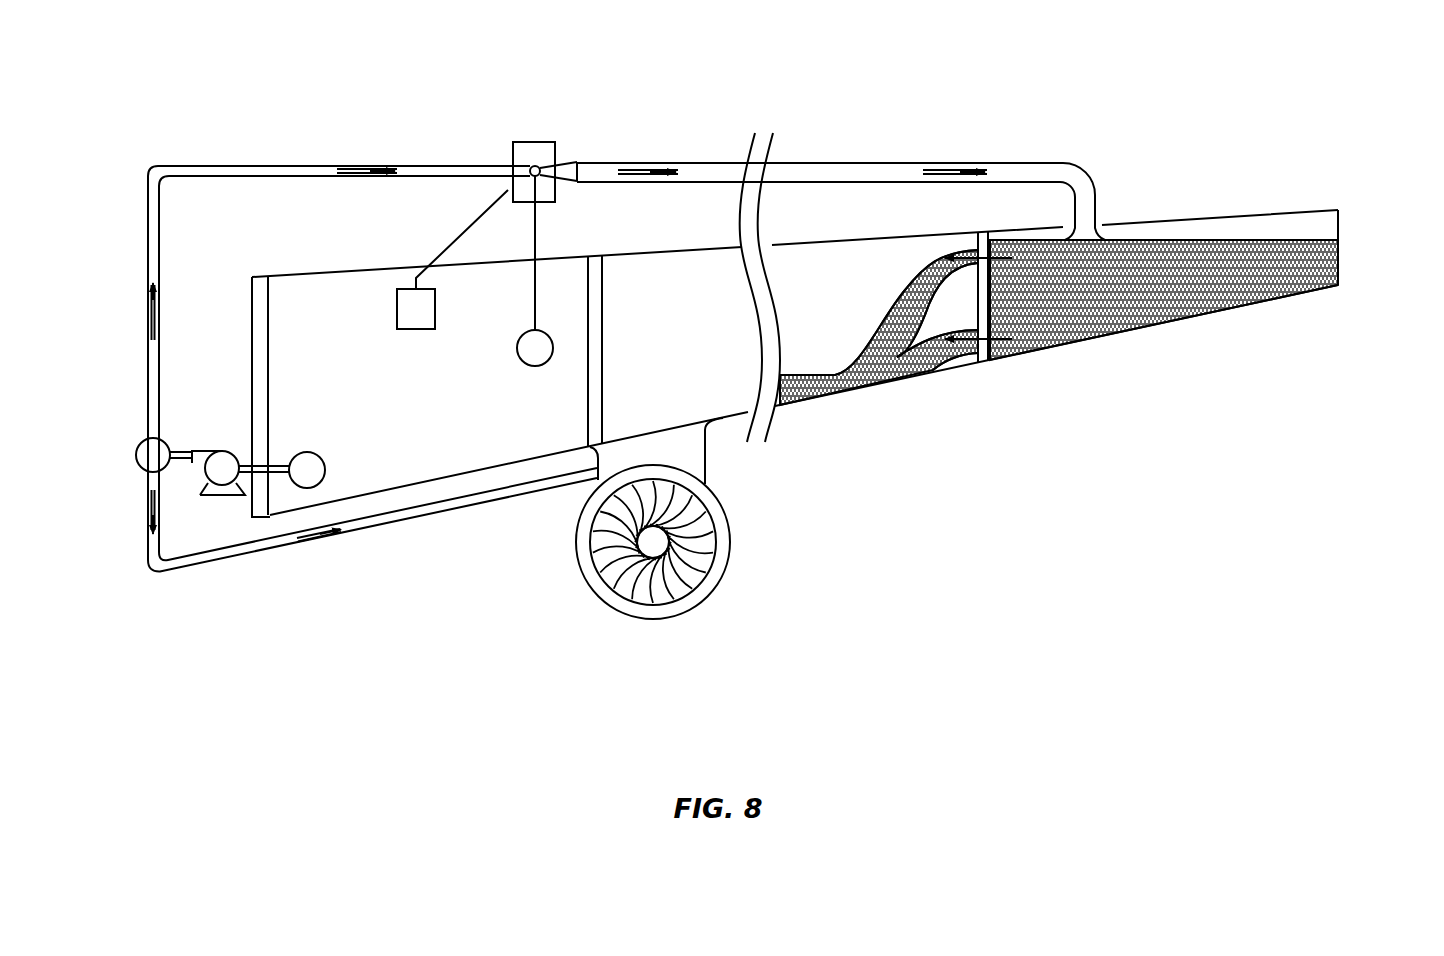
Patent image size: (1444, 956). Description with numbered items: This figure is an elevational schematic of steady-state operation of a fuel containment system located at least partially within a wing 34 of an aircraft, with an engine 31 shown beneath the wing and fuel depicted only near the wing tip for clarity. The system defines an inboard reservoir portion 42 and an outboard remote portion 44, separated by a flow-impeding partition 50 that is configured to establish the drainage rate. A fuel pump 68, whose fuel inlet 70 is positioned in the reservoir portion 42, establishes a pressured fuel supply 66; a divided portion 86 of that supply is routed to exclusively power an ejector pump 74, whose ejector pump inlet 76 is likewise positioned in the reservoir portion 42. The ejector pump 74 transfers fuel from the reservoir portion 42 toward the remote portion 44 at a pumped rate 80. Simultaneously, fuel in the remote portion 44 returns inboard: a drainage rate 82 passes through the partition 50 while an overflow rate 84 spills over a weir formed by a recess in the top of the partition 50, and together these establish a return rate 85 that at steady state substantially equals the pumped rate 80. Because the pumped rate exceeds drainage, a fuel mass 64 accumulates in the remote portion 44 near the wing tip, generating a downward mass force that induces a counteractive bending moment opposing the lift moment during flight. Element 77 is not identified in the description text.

The engine 31 is at (730, 518).
The wing 34 is at (1362, 243).
The reservoir portion 42 is at (405, 496).
The remote portion 44 is at (1320, 192).
The flow-impeding partition 50 is at (985, 356).
The fuel mass 64 is at (1133, 307).
The pressured fuel supply 66 is at (140, 447).
The fuel pump 68 is at (222, 452).
The fuel inlet 70 is at (317, 458).
The ejector pump 74 is at (526, 130).
The ejector pump inlet 76 is at (528, 360).
The controller 77 is at (413, 325).
The pumped rate 80 is at (838, 165).
The drainage rate 82 is at (935, 370).
The overflow rate 84 is at (905, 300).
The return rate 85 is at (807, 400).
The divided portion 86 is at (285, 161).